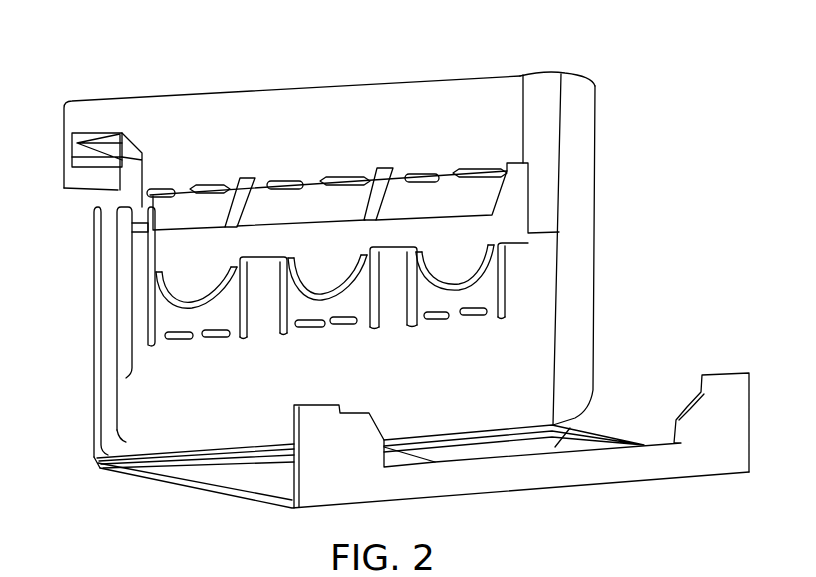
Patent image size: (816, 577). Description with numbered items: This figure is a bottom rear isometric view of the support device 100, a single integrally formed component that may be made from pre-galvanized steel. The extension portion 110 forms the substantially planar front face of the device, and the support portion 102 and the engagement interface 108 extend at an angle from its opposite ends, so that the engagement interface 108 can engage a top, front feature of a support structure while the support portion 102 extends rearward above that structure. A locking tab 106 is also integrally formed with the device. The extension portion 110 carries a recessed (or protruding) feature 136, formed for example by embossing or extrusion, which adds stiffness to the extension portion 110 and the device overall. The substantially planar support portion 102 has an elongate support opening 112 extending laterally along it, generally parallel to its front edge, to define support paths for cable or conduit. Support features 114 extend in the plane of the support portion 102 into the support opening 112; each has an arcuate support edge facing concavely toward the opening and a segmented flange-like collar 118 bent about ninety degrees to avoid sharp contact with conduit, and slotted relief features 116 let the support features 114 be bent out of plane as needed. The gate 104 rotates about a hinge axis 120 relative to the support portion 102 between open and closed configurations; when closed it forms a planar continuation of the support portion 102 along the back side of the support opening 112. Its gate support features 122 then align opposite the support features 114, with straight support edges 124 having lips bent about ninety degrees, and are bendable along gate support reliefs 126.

The support device 100 is at (654, 50).
The support portion 102 is at (96, 457).
The gate 104 is at (345, 103).
The locking tab 106 is at (125, 190).
The engagement interface 108 is at (748, 428).
The extension portion 110 is at (133, 472).
The support opening 112 is at (513, 200).
The support features 114 is at (229, 317).
The slotted relief features 116 is at (206, 338).
The segmented flange-like collar 118 is at (200, 307).
The hinge axis 120 is at (528, 87).
The gate support features 122 is at (175, 212).
The support edges 124 is at (172, 232).
The gate support reliefs 126 is at (213, 188).
The recessed feature 136 is at (263, 468).